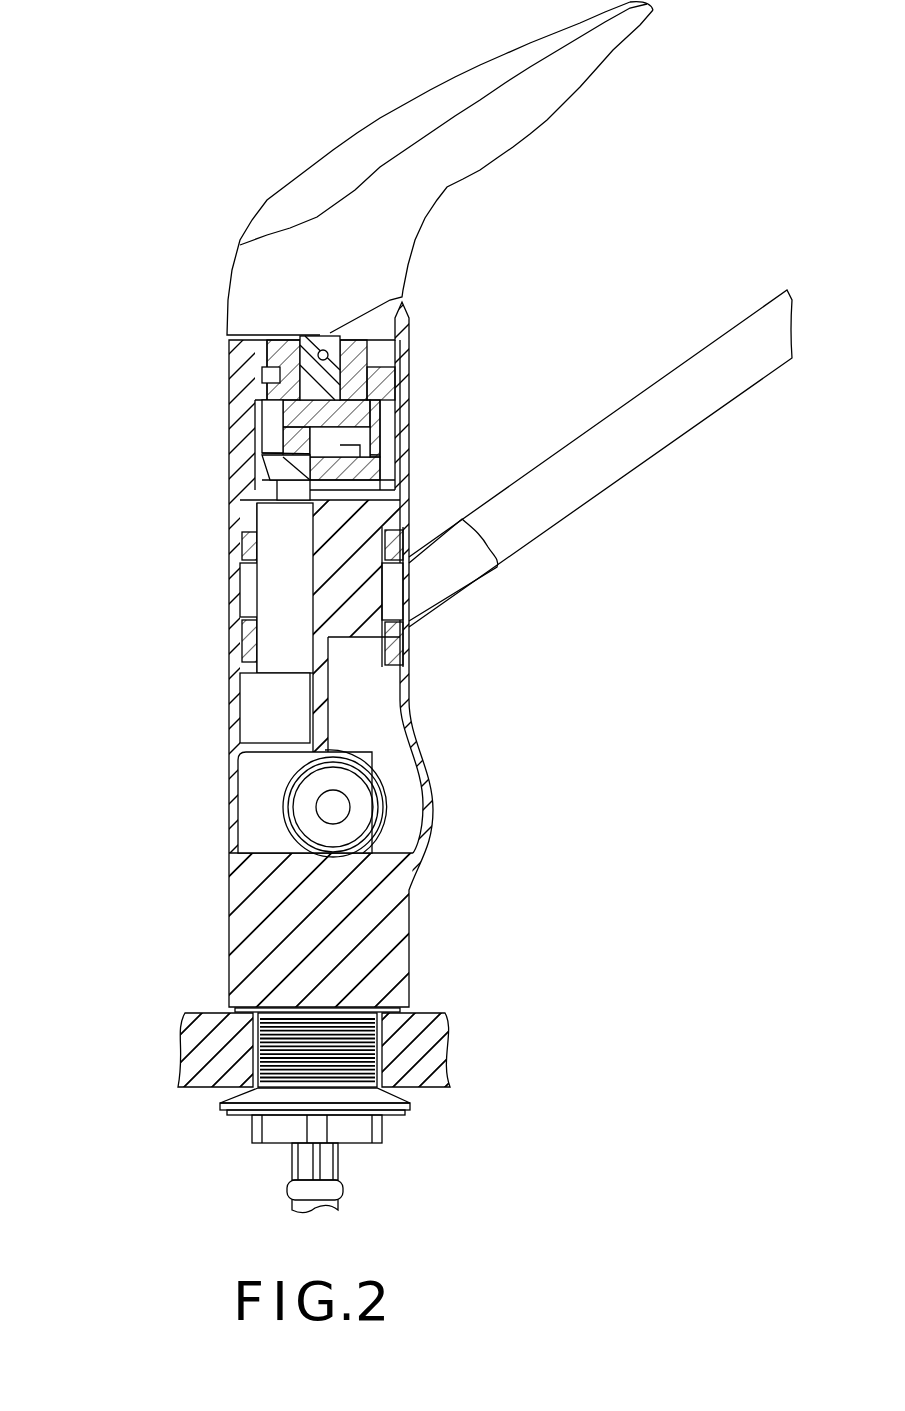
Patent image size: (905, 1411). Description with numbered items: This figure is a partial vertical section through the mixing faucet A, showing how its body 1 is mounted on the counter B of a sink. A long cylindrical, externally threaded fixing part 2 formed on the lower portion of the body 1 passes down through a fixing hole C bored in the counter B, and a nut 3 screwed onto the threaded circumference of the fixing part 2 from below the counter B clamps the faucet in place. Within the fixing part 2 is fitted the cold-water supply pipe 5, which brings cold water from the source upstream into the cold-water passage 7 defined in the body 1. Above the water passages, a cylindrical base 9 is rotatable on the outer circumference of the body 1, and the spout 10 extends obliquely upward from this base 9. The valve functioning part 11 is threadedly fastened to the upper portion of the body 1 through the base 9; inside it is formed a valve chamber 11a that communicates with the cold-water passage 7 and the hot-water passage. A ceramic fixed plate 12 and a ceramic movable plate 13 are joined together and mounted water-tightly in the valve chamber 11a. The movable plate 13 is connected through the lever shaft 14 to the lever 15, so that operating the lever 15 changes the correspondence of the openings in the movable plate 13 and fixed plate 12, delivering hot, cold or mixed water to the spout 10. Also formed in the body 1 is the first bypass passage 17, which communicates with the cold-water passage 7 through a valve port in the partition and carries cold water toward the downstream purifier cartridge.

The body 1 is at (423, 752).
The fixing part 2 is at (375, 1062).
The nut 3 is at (273, 1128).
The cold-water supply pipe 5 is at (328, 1162).
The cold-water passage 7 is at (250, 715).
The cylindrical base 9 is at (232, 582).
The spout 10 is at (617, 465).
The valve functioning part 11 is at (238, 468).
The valve chamber 11a is at (265, 378).
The fixed plate 12 is at (363, 470).
The movable plate 13 is at (370, 423).
The lever shaft 14 is at (367, 353).
The lever 15 is at (410, 220).
The first bypass passage 17 is at (250, 813).
The mixing faucet A is at (486, 802).
The counter B is at (450, 1030).
The fixing hole C is at (237, 1055).